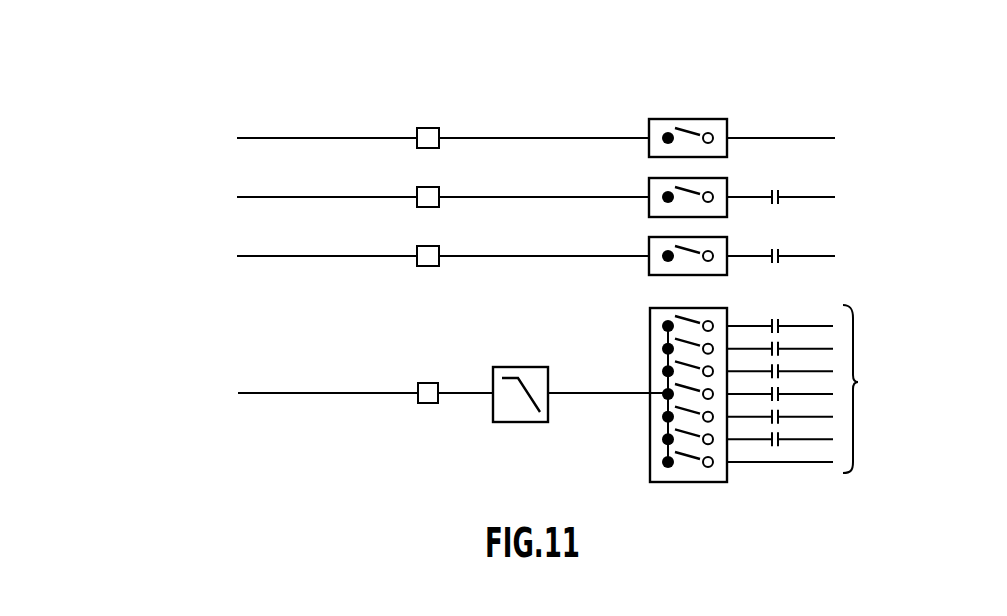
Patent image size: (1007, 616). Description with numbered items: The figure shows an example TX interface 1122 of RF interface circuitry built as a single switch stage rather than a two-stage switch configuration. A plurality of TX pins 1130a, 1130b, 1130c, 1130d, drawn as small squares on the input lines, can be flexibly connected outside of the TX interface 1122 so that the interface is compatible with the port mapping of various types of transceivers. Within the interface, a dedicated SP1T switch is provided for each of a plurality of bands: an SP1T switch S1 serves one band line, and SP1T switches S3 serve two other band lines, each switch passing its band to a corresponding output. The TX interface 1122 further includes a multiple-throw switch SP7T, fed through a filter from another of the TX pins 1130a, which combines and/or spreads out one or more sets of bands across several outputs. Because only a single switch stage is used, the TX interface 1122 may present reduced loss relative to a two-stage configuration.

The TX interface 1122 is at (546, 88).
The TX pin 1130a is at (432, 383).
The TX pin 1130b is at (439, 250).
The TX pin 1130c is at (439, 192).
The TX pin 1130d is at (432, 128).
The SP1T switch S1 is at (727, 127).
The SP1T switch S3 is at (727, 189).
The multiple-throw switch SP7T is at (695, 490).